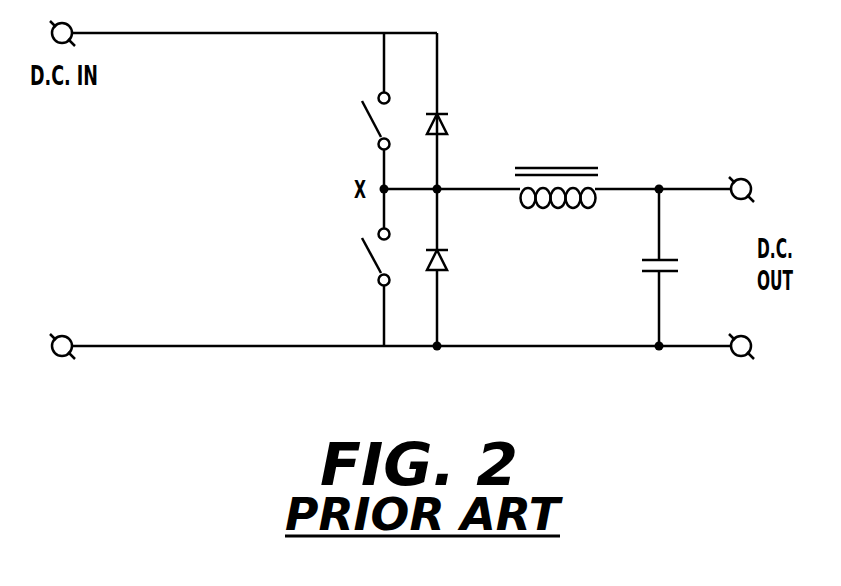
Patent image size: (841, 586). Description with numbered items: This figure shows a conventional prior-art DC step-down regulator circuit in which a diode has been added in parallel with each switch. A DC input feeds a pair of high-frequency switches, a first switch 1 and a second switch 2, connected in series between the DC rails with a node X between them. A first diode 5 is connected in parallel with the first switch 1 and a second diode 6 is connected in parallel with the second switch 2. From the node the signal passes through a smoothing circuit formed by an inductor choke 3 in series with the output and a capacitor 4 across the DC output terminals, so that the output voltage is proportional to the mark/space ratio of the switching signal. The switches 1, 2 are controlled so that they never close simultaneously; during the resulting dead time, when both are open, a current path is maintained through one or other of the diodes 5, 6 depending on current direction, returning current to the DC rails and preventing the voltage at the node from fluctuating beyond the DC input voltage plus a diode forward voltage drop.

The first switch 1 is at (365, 91).
The second switch 2 is at (365, 288).
The inductor choke 3 is at (556, 206).
The capacitor 4 is at (647, 267).
The first diode 5 is at (450, 87).
The second diode 6 is at (450, 265).